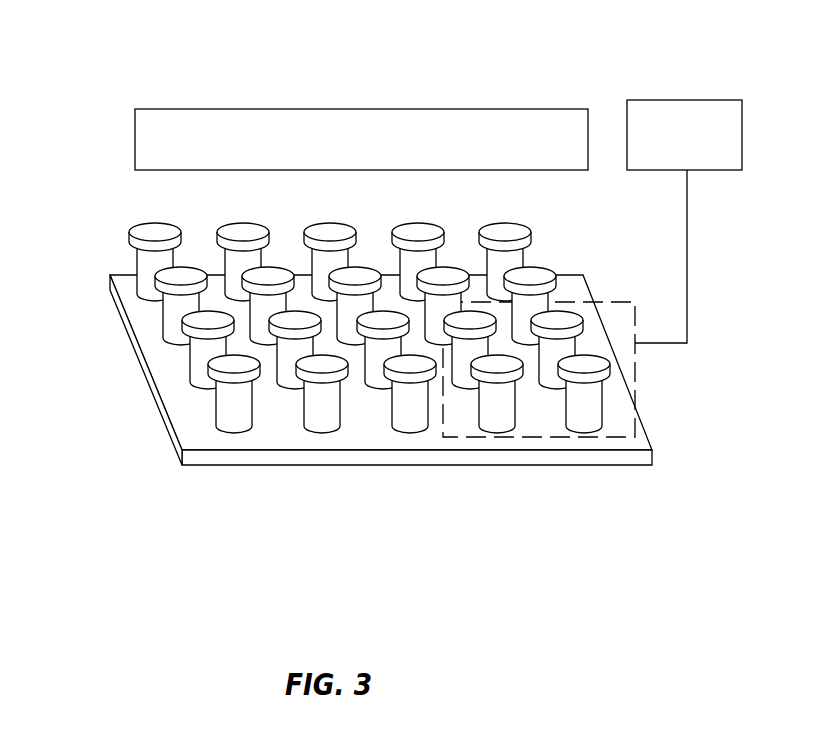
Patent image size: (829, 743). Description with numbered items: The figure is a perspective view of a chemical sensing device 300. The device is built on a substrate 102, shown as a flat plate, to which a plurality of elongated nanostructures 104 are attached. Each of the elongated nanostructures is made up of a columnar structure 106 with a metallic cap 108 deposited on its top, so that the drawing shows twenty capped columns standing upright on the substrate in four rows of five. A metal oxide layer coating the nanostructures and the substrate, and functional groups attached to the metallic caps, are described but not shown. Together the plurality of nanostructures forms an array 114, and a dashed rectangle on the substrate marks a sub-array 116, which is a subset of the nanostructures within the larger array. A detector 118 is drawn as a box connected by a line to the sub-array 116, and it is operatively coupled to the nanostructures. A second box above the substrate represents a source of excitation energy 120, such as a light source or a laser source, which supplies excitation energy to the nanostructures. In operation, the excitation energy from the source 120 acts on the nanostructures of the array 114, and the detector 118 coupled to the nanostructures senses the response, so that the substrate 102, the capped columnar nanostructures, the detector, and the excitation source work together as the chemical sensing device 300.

The chemical sensing device 300 is at (45, 22).
The substrate 102 is at (268, 458).
The elongated nanostructures 104 is at (130, 222).
The columnar structures 106 is at (230, 407).
The metallic caps 108 is at (233, 363).
The array 114 is at (176, 206).
The sub-array 116 is at (548, 437).
The detector 118 is at (667, 146).
The source of excitation energy 120 is at (343, 152).